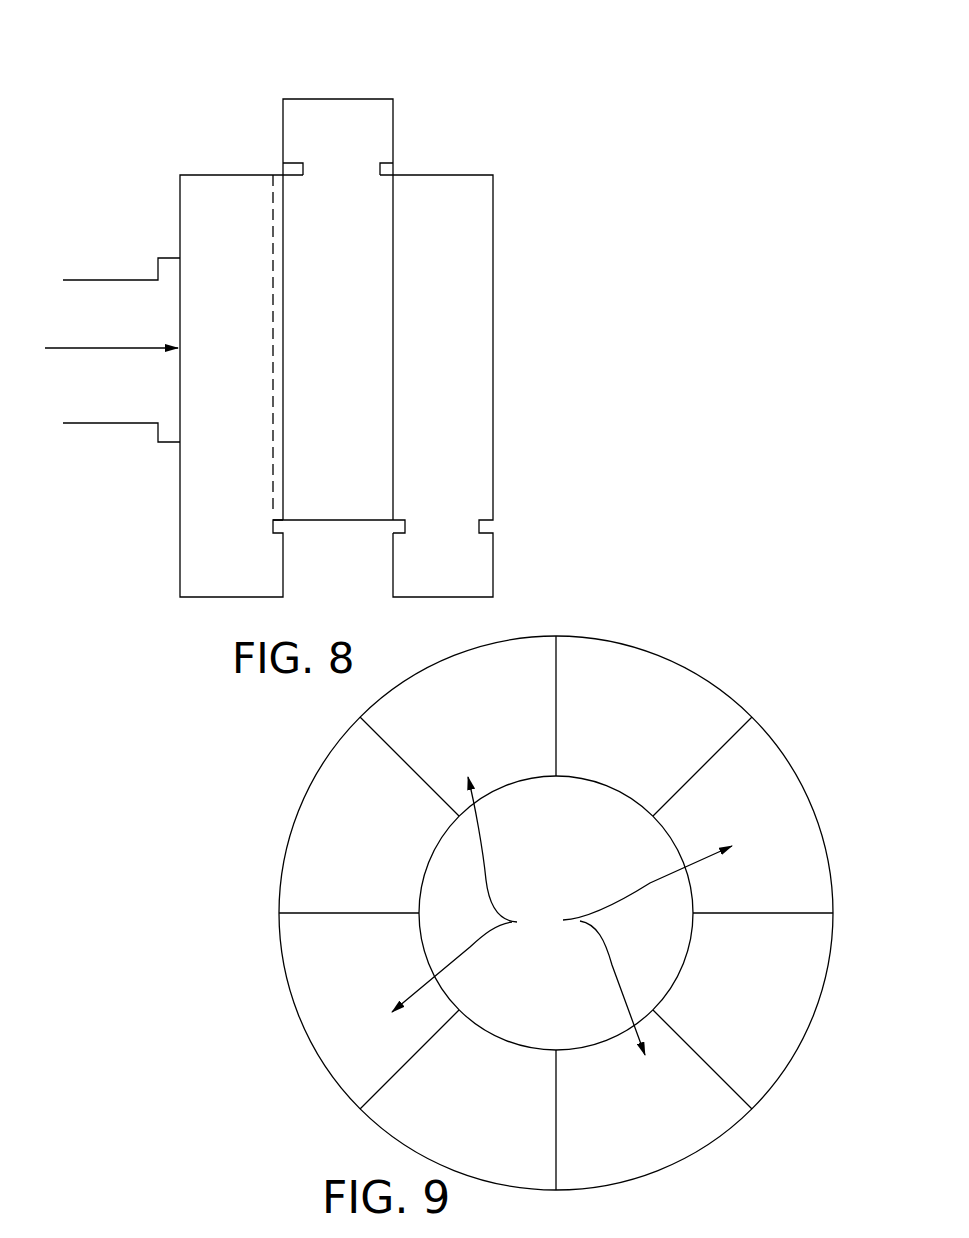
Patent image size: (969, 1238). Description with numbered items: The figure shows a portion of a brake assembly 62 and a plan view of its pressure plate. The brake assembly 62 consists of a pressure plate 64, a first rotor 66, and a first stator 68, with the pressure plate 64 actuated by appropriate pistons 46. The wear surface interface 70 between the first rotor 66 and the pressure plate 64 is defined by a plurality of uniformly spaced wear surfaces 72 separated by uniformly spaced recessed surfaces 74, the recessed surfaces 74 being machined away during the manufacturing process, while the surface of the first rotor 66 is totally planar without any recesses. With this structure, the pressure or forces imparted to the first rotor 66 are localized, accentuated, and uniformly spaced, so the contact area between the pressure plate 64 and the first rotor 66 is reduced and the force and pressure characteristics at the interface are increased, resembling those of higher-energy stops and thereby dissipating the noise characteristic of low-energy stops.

In FIG. 8, the pistons 46 is at (122, 293).
In FIG. 8, the brake assembly 62 is at (137, 139).
In FIG. 8, the pressure plate 64 is at (198, 583).
In FIG. 9, the pressure plate 64 is at (760, 627).
In FIG. 8, the first rotor 66 is at (373, 116).
In FIG. 8, the first stator 68 is at (493, 175).
In FIG. 8, the wear surface interface 70 is at (281, 447).
In FIG. 9, the wear surface interface 70 is at (752, 792).
In FIG. 9, the wear surfaces 72 is at (562, 915).
In FIG. 9, the recessed surfaces 74 is at (607, 695).